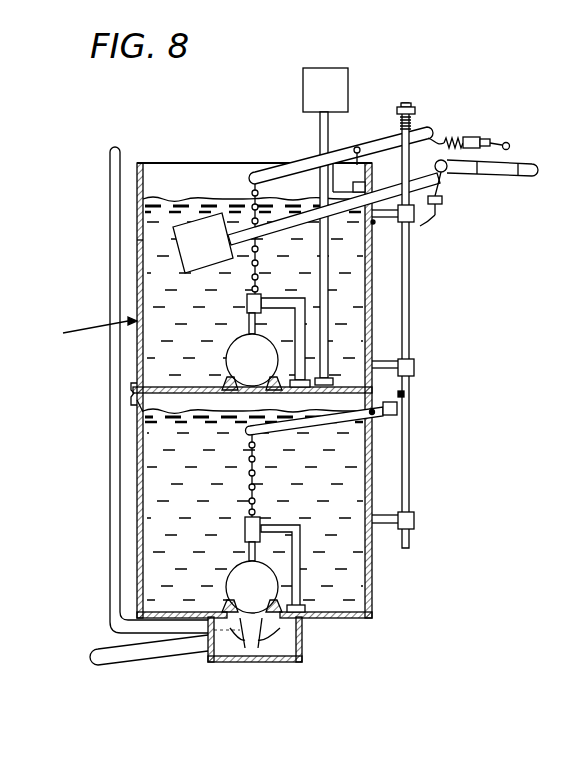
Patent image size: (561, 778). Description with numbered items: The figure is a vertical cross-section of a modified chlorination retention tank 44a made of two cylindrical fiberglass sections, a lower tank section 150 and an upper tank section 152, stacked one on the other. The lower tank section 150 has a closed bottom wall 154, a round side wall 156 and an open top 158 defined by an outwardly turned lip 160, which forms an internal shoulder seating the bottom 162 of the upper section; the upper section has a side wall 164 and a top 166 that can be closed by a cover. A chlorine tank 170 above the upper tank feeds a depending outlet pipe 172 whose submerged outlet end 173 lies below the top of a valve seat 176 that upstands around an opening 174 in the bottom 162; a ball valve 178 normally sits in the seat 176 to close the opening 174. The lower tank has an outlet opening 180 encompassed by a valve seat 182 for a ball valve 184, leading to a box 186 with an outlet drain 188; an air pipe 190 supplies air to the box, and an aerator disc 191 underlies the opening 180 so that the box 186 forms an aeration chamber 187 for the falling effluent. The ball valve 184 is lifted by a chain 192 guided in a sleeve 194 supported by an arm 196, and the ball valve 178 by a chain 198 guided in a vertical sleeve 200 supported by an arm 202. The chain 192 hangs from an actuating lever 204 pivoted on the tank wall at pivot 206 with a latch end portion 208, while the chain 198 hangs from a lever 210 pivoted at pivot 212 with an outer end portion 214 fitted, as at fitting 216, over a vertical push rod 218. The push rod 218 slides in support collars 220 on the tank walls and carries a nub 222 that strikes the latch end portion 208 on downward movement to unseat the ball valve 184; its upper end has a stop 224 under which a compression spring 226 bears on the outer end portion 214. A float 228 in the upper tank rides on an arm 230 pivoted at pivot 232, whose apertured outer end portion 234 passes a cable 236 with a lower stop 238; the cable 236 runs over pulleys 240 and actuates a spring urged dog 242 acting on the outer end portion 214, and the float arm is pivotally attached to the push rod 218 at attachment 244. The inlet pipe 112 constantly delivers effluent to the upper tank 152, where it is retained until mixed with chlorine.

The chlorination retention tank 44a is at (78, 332).
The inlet pipe 112 is at (522, 176).
The lower tank section 150 is at (138, 533).
The upper tank section 152 is at (138, 240).
The bottom wall 154 is at (355, 612).
The side wall 156 is at (372, 563).
The open top 158 is at (138, 410).
The outwardly turned lip 160 is at (130, 385).
The bottom 162 is at (163, 383).
The side wall 164 is at (138, 267).
The top 166 is at (183, 163).
The chlorine tank 170 is at (332, 87).
The outlet pipe 172 is at (327, 128).
The submerged outlet end 173 is at (328, 373).
The opening 174 is at (232, 420).
The valve seat 176 is at (230, 383).
The ball valve 178 is at (252, 360).
The outlet opening 180 is at (243, 623).
The valve seat 182 is at (225, 606).
The ball valve 184 is at (252, 587).
The box 186 is at (300, 660).
The aeration chamber 187 is at (257, 648).
The outlet drain 188 is at (125, 655).
The air pipe 190 is at (117, 503).
The aerator disc 191 is at (297, 633).
The chain 192 is at (247, 468).
The sleeve 194 is at (244, 528).
The arm 196 is at (300, 558).
The chain 198 is at (250, 277).
The vertical sleeve 200 is at (249, 302).
The arm 202 is at (300, 337).
The actuating lever 204 is at (297, 427).
The pivot 206 is at (380, 414).
The latch end portion 208 is at (397, 412).
The lever 210 is at (272, 172).
The pivot 212 is at (358, 150).
The outer end portion 214 is at (470, 135).
The fitting 216 is at (333, 165).
The push rod 218 is at (409, 297).
The support collars 220 is at (409, 222).
The nub 222 is at (404, 394).
The stop 224 is at (413, 103).
The compression spring 226 is at (413, 122).
The float 228 is at (203, 243).
The arm 230 is at (252, 193).
The pivot 232 is at (375, 225).
The outer end portion 234 is at (447, 178).
The cable 236 is at (482, 175).
The stop 238 is at (435, 206).
The pulleys 240 is at (509, 146).
The spring urged dog 242 is at (452, 136).
The pivotal attachment 244 is at (422, 228).